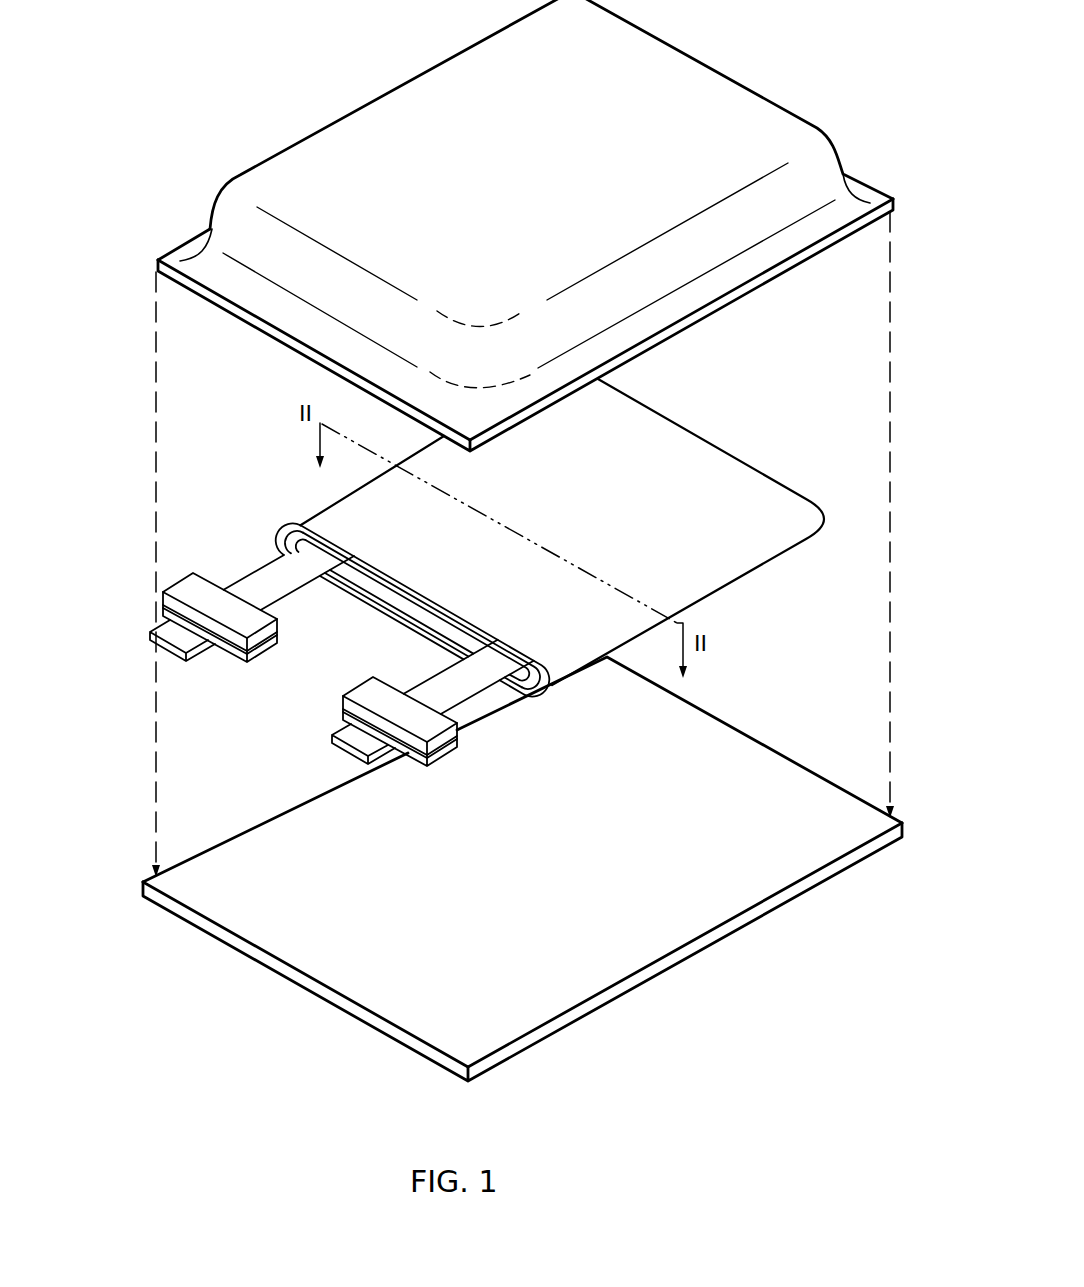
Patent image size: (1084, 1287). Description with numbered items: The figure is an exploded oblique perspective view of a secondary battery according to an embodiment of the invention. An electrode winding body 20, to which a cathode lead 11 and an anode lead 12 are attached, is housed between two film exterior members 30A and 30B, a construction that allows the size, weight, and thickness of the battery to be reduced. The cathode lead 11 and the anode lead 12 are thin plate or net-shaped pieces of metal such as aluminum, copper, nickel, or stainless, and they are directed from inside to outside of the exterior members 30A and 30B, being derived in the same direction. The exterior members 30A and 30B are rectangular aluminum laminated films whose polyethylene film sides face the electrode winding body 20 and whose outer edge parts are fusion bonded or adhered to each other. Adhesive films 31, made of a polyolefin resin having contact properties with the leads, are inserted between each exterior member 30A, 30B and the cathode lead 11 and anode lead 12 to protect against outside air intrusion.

The exterior member 30A is at (688, 80).
The exterior member 30B is at (752, 762).
The electrode winding body 20 is at (643, 432).
The cathode lead 11 is at (160, 630).
The anode lead 12 is at (345, 733).
The adhesive film 31 is at (365, 692).